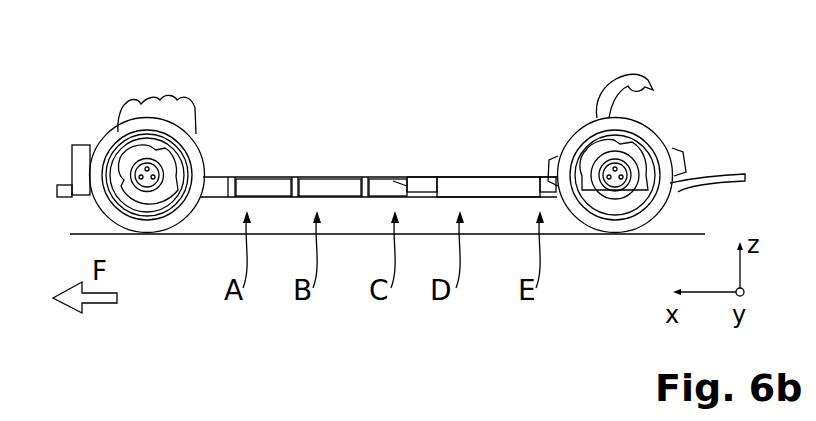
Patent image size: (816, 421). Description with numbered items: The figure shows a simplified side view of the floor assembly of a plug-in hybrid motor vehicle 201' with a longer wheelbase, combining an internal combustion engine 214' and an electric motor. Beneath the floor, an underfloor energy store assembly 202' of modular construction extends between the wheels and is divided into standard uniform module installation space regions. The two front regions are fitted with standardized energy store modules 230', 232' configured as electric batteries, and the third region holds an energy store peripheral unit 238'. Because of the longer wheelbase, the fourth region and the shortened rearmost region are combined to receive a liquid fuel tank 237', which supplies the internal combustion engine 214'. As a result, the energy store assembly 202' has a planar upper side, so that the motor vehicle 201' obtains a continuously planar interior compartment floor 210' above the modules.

The motor vehicle 201' is at (401, 120).
The underfloor energy store assembly 202' is at (378, 119).
The interior compartment floor 210' is at (434, 144).
The internal combustion engine 214' is at (177, 73).
The energy store module 230' is at (249, 146).
The energy store module 232' is at (316, 146).
The liquid fuel tank 237' is at (496, 147).
The energy store peripheral unit 238' is at (372, 146).